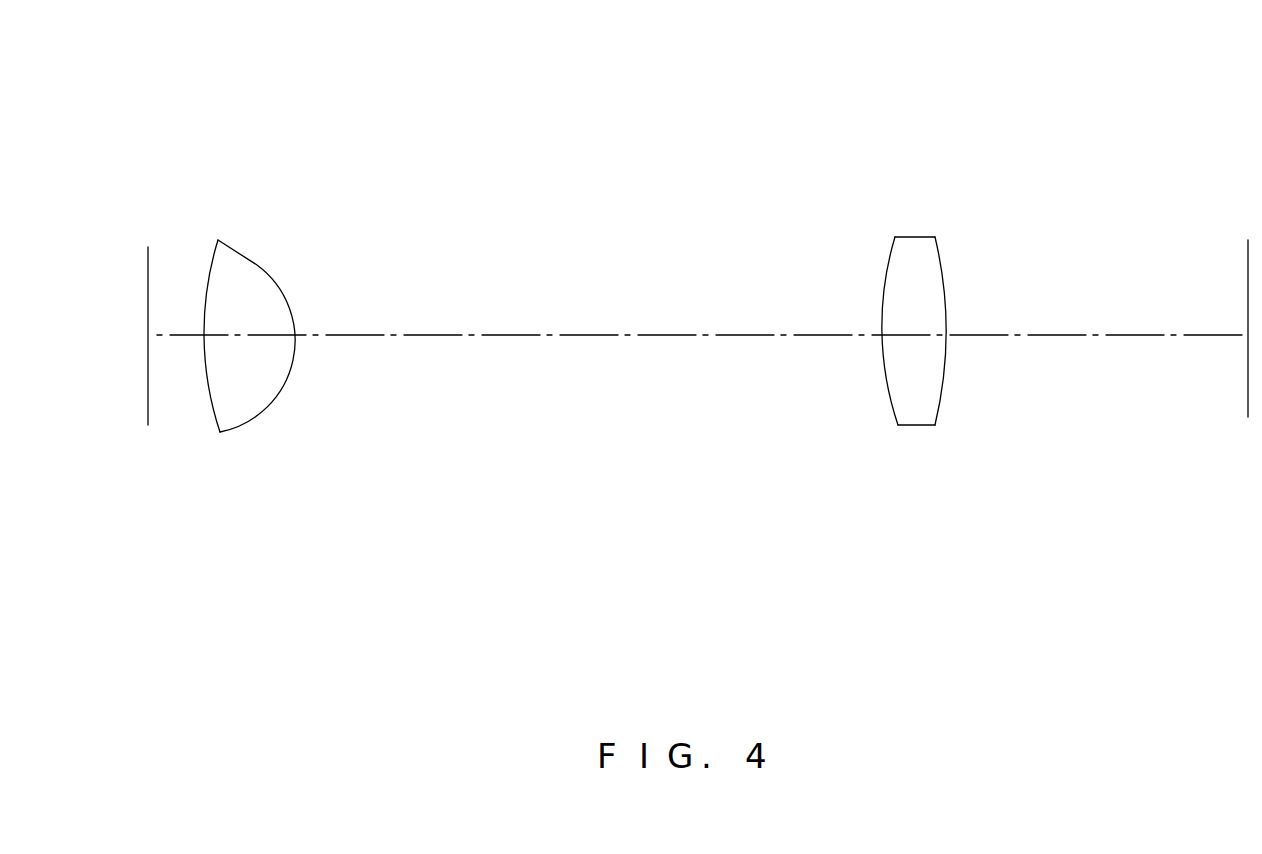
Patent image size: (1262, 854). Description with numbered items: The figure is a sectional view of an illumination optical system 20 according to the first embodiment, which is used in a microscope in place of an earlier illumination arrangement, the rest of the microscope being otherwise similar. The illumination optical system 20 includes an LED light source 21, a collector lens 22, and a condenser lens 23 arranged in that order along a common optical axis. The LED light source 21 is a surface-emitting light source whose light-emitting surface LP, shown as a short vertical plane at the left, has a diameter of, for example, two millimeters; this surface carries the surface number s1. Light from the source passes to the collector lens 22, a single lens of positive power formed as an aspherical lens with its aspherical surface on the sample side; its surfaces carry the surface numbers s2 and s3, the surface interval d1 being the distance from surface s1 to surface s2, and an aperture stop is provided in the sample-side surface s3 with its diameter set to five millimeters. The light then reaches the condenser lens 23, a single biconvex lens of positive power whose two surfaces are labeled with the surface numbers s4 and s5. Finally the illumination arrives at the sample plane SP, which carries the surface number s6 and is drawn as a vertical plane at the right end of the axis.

The illumination optical system 20 is at (1187, 57).
The LED light source 21 is at (120, 335).
The collector lens 22 is at (245, 335).
The condenser lens 23 is at (903, 332).
The surface number s1 is at (149, 277).
The surface number s2 is at (203, 278).
The surface number s3 is at (257, 265).
The surface number s4 is at (885, 283).
The surface number s5 is at (940, 273).
The surface number s6 is at (1247, 277).